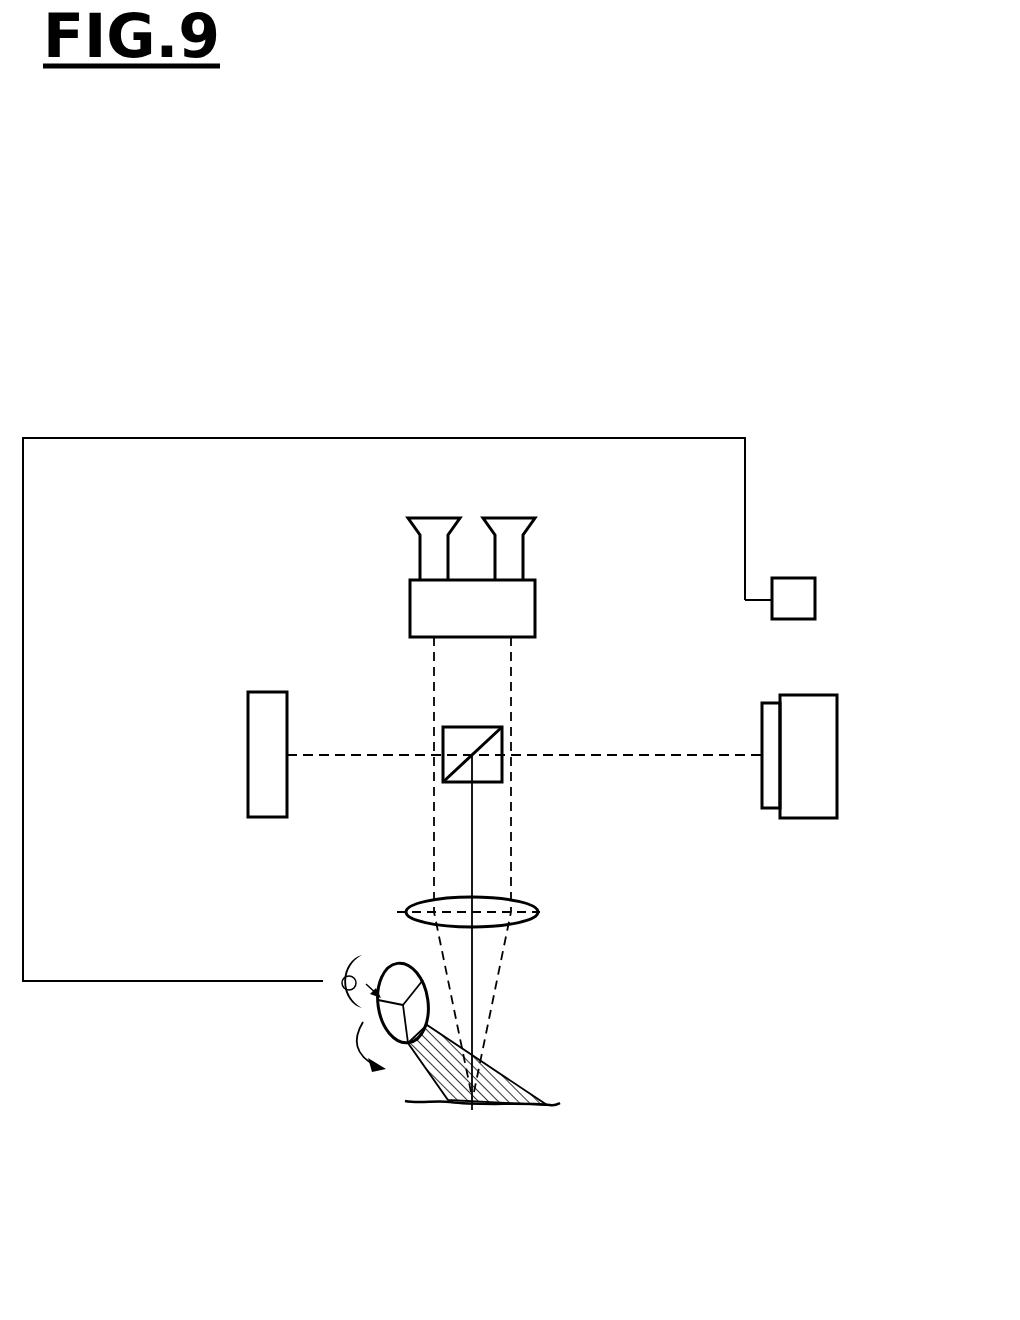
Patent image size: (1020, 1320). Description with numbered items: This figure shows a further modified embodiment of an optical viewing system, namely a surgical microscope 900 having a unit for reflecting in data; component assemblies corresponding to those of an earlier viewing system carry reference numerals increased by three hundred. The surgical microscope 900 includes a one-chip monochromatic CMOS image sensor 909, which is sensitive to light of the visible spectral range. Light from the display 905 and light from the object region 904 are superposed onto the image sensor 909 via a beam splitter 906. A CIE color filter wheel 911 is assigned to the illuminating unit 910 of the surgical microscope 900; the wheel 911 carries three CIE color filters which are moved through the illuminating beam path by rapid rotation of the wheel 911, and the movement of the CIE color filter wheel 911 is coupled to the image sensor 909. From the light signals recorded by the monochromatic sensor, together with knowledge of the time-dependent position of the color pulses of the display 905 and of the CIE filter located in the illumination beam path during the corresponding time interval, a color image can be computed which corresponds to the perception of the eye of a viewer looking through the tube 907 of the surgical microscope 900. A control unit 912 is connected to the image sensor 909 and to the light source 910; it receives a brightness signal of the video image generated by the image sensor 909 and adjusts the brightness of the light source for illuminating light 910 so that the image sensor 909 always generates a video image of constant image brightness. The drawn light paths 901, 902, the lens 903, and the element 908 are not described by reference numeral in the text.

The surgical microscope 900 is at (680, 382).
The first light beam 901 is at (434, 849).
The second light beam 902 is at (512, 843).
The projection lens 903 is at (538, 912).
The object region 904 is at (540, 1107).
The display 905 is at (263, 730).
The beam splitter 906 is at (492, 773).
The tube 907 is at (410, 600).
The light modulator 908 is at (817, 707).
The monochromatic CMOS image sensor 909 is at (772, 808).
The illuminating unit 910 is at (332, 1000).
The CIE color filter wheel 911 is at (403, 963).
The control unit 912 is at (803, 584).